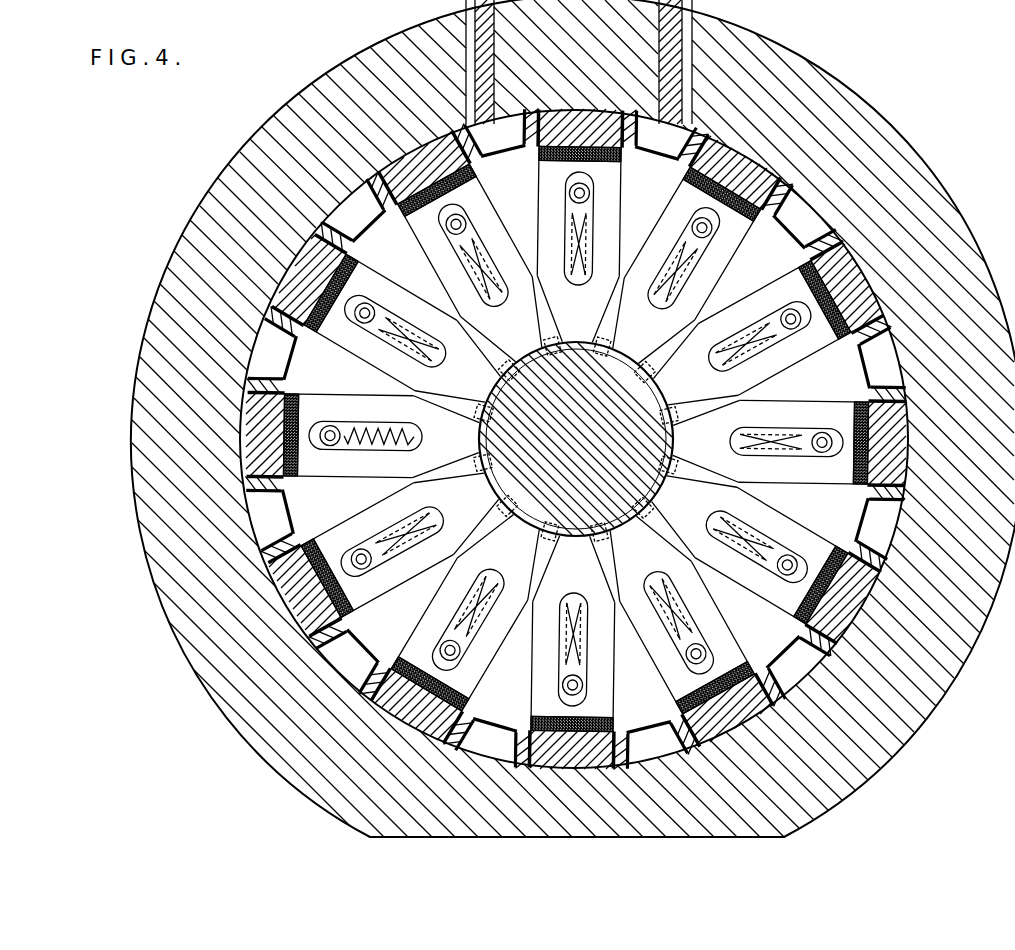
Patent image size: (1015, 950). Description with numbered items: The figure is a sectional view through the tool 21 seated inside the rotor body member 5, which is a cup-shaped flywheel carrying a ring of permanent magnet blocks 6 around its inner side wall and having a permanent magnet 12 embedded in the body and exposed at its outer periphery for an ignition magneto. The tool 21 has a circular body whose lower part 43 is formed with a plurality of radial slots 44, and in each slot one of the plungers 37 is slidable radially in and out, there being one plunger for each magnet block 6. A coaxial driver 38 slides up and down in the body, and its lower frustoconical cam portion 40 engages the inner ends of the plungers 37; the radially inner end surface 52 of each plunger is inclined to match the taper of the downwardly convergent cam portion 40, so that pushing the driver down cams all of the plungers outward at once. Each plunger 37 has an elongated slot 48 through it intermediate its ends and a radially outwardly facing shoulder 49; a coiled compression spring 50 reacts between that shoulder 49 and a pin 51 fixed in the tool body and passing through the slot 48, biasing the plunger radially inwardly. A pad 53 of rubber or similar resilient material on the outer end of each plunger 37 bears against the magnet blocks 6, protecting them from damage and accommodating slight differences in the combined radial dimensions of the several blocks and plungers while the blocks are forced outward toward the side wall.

The rotor body member 5 is at (950, 152).
The permanent magnet 12 is at (695, 18).
The tool 21 is at (843, 292).
The permanent magnet blocks 6 is at (607, 150).
The lower part 43 is at (654, 200).
The driver 38 is at (664, 386).
The cam portion 40 is at (479, 438).
The radially inner end surface 52 is at (503, 373).
The plungers 37 is at (438, 257).
The radial slots 44 is at (612, 225).
The pad 53 is at (537, 161).
The slot 48 is at (390, 344).
The pin 51 is at (466, 221).
The shoulder 49 is at (500, 305).
The coiled compression spring 50 is at (414, 427).